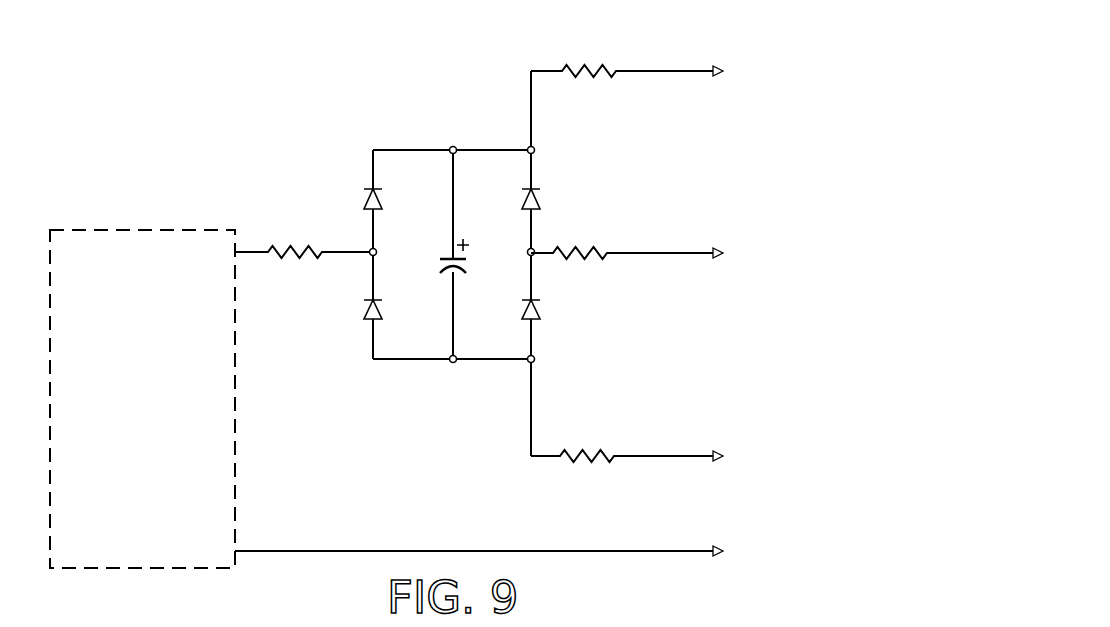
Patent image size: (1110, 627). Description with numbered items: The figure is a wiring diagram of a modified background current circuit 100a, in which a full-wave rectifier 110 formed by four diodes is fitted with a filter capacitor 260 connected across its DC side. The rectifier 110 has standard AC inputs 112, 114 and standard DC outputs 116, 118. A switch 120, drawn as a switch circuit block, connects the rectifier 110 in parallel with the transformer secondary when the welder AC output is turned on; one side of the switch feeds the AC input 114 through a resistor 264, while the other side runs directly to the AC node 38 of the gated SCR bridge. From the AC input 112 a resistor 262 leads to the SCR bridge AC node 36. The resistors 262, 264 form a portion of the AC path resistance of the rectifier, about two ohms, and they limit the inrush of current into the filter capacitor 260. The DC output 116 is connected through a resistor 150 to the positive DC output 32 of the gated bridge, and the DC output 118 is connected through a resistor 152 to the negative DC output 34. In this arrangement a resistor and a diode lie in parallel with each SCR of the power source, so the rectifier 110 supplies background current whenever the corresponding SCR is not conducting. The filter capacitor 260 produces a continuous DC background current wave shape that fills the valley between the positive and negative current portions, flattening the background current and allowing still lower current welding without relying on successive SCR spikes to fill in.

The switch 120 is at (140, 230).
The resistor 264 is at (300, 247).
The modified background current circuit 100a is at (413, 131).
The full-wave rectifier 110 is at (494, 135).
The filter capacitor 260 is at (437, 262).
The AC input 114 is at (378, 250).
The AC input 112 is at (526, 249).
The DC output 116 is at (536, 148).
The DC output 118 is at (536, 361).
The resistor 150 is at (593, 65).
The resistor 262 is at (592, 248).
The resistor 152 is at (592, 450).
The DC output 32 is at (805, 72).
The SCR bridge AC node 36 is at (811, 254).
The DC output 34 is at (805, 456).
The node 38 is at (563, 551).